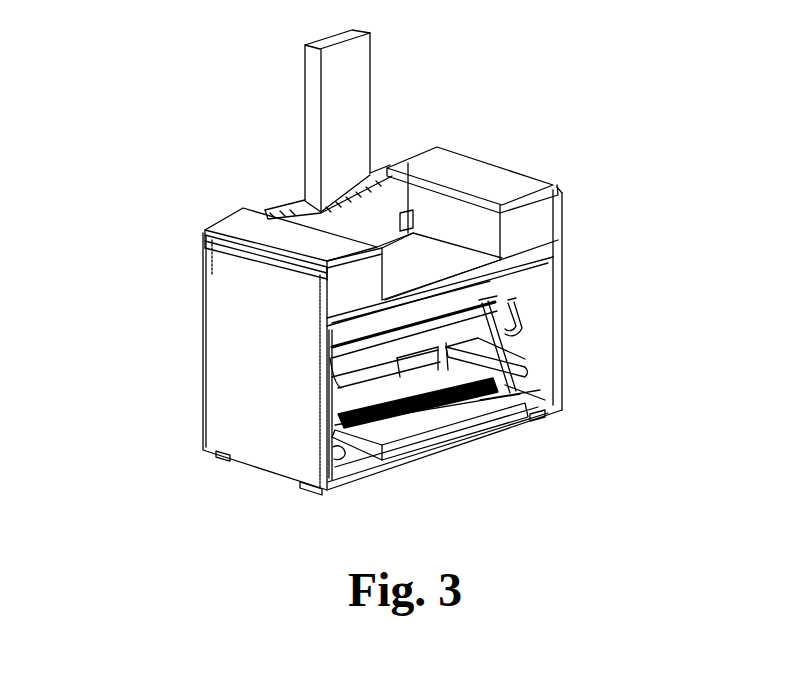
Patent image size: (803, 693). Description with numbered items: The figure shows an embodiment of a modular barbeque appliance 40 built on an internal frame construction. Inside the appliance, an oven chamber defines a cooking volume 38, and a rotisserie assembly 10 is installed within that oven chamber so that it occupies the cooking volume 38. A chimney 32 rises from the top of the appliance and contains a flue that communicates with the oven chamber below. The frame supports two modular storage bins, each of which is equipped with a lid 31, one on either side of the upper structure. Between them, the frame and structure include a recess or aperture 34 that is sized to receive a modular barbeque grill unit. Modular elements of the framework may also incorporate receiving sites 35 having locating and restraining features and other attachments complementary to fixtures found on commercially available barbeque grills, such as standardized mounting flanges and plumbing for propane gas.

The rotisserie assembly 10 is at (373, 492).
The lids 31 is at (270, 228).
The chimney 32 is at (315, 105).
The recess or aperture 34 is at (443, 260).
The receiving sites 35 is at (405, 212).
The cooking volume 38 is at (533, 297).
The modular barbeque appliance 40 is at (116, 20).